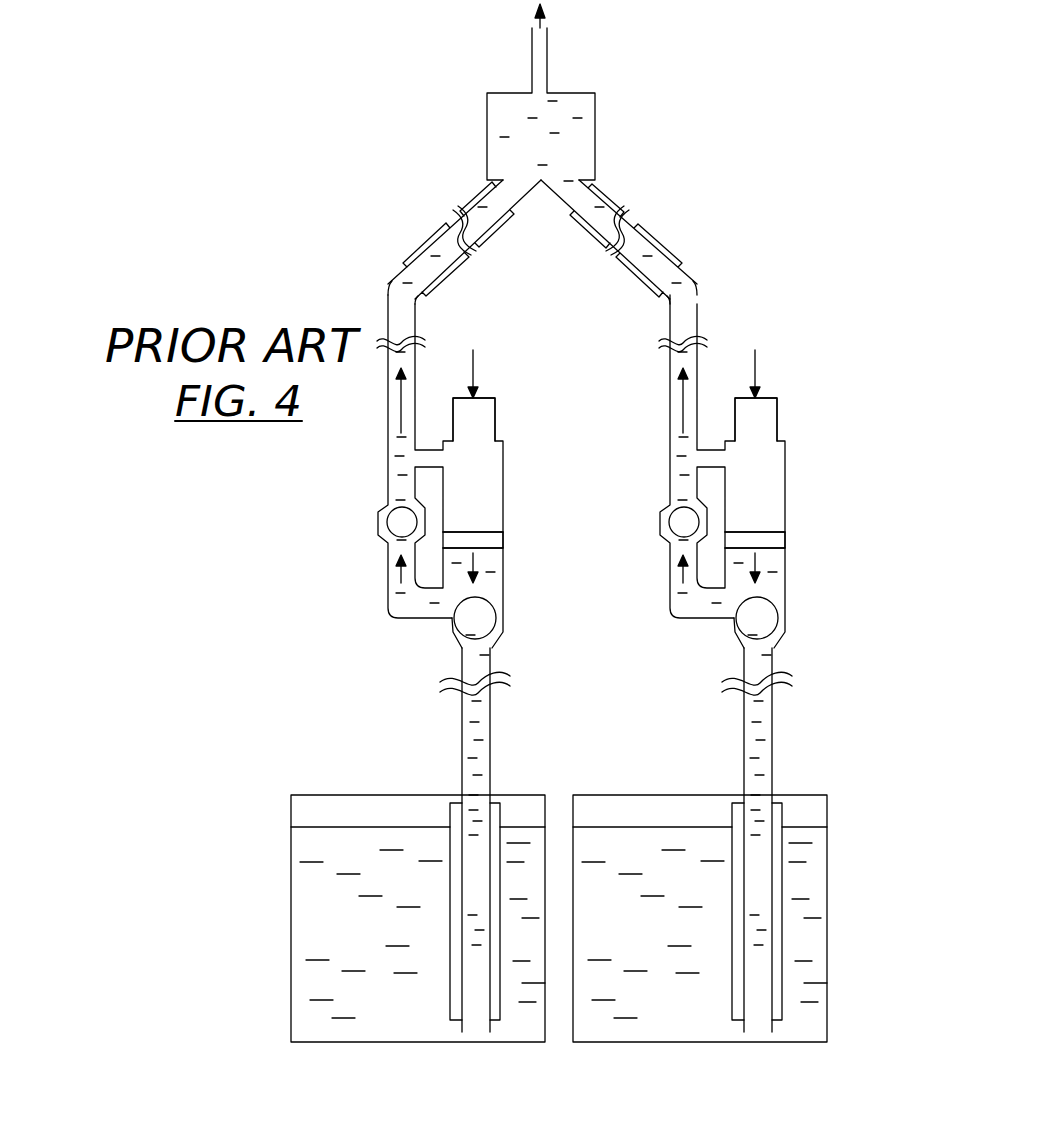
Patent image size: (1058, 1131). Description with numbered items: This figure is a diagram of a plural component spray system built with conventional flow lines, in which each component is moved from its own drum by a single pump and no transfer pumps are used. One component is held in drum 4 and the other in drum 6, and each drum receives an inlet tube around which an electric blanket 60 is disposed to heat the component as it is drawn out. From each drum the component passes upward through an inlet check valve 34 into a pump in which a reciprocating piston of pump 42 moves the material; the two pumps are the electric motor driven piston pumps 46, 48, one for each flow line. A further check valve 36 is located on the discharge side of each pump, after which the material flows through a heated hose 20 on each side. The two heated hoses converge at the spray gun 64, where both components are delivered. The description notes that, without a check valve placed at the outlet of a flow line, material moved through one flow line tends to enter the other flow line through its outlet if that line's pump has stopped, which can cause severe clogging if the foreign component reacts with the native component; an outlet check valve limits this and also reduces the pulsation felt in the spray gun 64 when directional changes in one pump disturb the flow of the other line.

The spray gun 64 is at (487, 124).
The heated hose 20 is at (425, 229).
The check valve 36 is at (378, 512).
The piston of pump 42 is at (496, 412).
The electric motor driven piston pump 48 is at (514, 536).
The electric motor driven piston pump 46 is at (796, 536).
The check valve 34 is at (496, 612).
The drum 6 is at (291, 864).
The drum 4 is at (828, 858).
The electric blanket 60 is at (500, 1018).